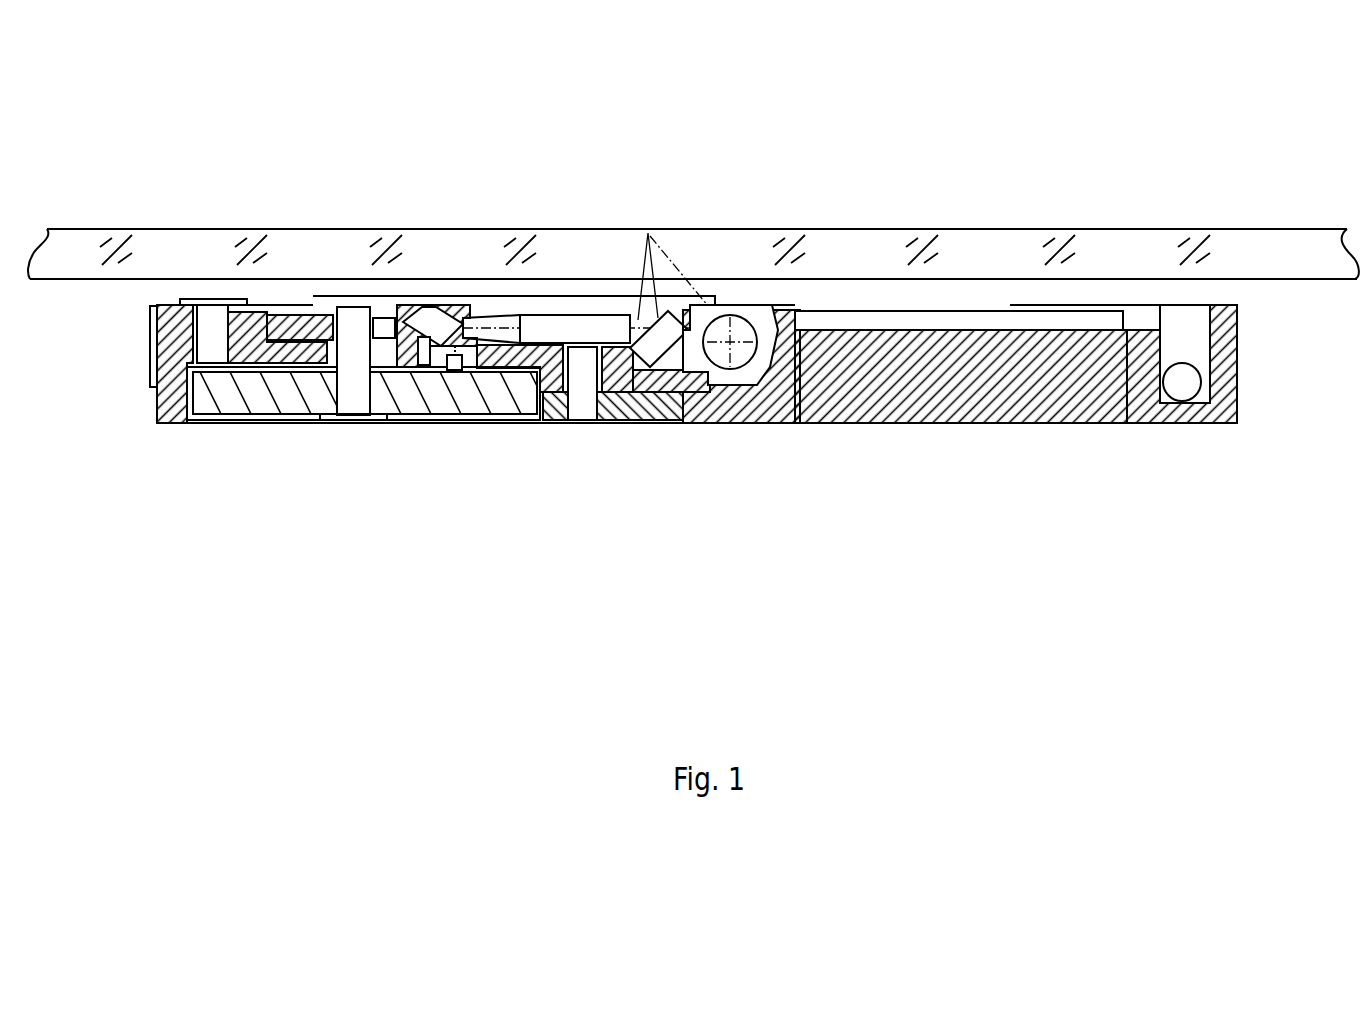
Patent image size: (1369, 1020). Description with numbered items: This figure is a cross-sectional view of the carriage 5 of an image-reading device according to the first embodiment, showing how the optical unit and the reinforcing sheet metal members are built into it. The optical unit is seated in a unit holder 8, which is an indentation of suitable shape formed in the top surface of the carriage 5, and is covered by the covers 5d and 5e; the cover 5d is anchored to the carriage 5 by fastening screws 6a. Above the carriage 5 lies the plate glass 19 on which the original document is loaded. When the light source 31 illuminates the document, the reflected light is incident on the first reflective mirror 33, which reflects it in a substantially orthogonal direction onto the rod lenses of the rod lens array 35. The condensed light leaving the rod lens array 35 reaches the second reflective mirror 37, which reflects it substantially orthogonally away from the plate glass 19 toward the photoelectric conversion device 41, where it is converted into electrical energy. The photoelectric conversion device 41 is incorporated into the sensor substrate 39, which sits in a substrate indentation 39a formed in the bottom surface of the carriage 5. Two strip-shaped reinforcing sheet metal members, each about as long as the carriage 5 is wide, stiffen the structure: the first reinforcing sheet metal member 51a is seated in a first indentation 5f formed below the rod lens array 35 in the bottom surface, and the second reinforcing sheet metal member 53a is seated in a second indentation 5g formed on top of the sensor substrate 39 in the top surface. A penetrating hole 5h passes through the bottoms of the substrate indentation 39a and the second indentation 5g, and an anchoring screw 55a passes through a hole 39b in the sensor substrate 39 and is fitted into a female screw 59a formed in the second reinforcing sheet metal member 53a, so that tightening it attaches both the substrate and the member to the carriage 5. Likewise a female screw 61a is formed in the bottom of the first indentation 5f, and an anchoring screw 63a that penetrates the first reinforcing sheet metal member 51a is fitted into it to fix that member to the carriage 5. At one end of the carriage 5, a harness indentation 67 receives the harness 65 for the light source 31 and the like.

The carriage 5 is at (963, 424).
The cover 5d is at (418, 304).
The cover 5e is at (950, 316).
The first indentation 5f is at (675, 424).
The second indentation 5g is at (268, 300).
The penetrating hole 5h is at (313, 424).
The fastening screw 6a is at (207, 323).
The unit holder 8 is at (496, 318).
The plate glass 19 is at (1142, 243).
The light source 31 is at (738, 316).
The first reflective mirror 33 is at (664, 312).
The rod lens array 35 is at (588, 320).
The second reflective mirror 37 is at (468, 318).
The sensor substrate 39 is at (440, 424).
The substrate indentation 39a is at (247, 424).
The hole 39b is at (375, 424).
The photoelectric conversion device 41 is at (478, 424).
The first reinforcing sheet metal member 51a is at (648, 424).
The second reinforcing sheet metal member 53a is at (286, 320).
The anchoring screw 55a is at (340, 424).
The female screw 59a is at (357, 316).
The female screw 61a is at (617, 424).
The anchoring screw 63a is at (573, 424).
The harness 65 is at (1183, 397).
The harness indentation 67 is at (1190, 348).